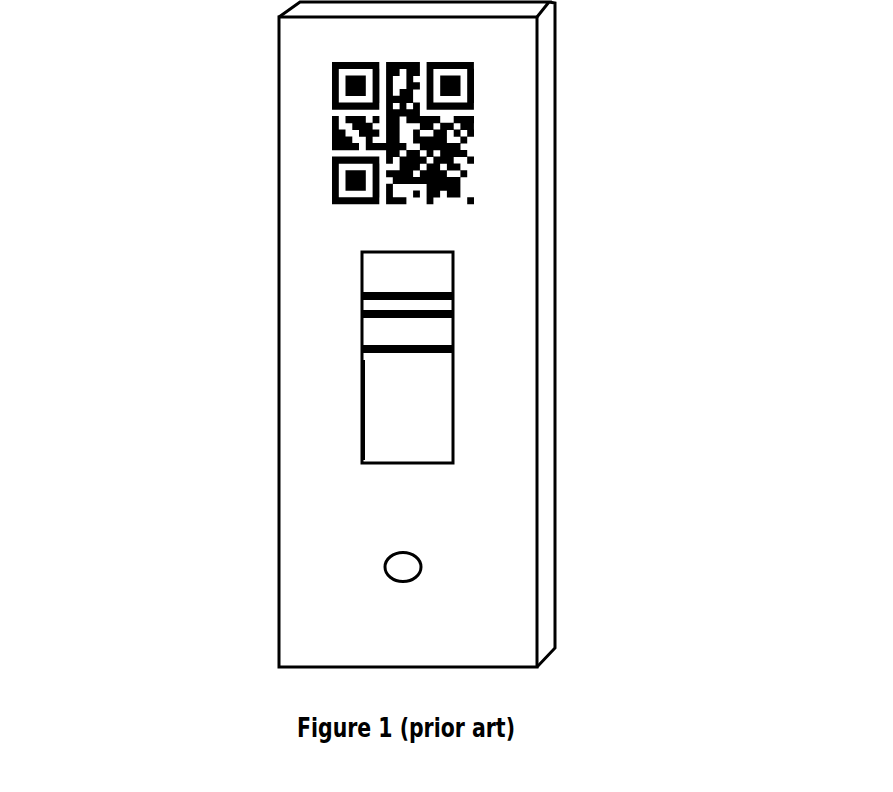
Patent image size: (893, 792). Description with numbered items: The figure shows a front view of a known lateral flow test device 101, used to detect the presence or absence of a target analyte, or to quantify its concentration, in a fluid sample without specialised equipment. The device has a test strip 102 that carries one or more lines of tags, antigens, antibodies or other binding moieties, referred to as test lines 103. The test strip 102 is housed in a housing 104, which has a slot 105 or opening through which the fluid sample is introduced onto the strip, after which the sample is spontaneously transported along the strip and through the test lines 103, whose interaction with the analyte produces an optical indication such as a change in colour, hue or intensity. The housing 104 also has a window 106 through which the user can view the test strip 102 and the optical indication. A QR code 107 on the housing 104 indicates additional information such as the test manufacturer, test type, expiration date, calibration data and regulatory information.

The lateral flow test device 101 is at (682, 97).
The test strip 102 is at (420, 393).
The test lines 103 is at (362, 348).
The housing 104 is at (537, 557).
The slot 105 is at (384, 562).
The window 106 is at (361, 423).
The QR code 107 is at (338, 111).